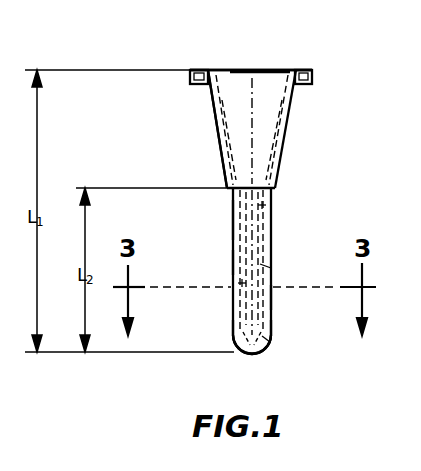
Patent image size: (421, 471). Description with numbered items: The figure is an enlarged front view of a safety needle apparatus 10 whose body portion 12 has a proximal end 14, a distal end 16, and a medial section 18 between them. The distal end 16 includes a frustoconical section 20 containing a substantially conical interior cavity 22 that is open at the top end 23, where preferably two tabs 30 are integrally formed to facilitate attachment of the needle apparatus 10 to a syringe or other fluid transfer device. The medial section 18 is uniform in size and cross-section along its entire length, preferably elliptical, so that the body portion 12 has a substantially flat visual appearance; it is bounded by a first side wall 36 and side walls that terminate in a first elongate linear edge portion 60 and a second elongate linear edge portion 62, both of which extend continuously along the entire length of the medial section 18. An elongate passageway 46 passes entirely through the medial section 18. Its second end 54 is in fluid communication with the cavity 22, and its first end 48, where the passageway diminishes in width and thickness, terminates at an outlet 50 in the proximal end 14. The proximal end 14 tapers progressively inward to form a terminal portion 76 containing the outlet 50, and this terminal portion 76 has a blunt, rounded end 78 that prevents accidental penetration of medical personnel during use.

The needle apparatus 10 is at (340, 98).
The body portion 12 is at (273, 234).
The proximal end 14 is at (233, 346).
The distal end 16 is at (290, 119).
The medial section 18 is at (232, 220).
The frustoconical section 20 is at (219, 142).
The conical interior cavity 22 is at (279, 68).
The top end 23 is at (242, 69).
The tabs 30 is at (190, 78).
The first side wall 36 is at (274, 266).
The elongate passageway 46 is at (235, 284).
The first end 48 is at (275, 339).
The outlet 50 is at (253, 357).
The second end 54 is at (274, 207).
The first elongate linear edge portion 60 is at (232, 262).
The second elongate linear edge portion 62 is at (272, 296).
The terminal portion 76 is at (244, 351).
The blunt, rounded end 78 is at (265, 352).